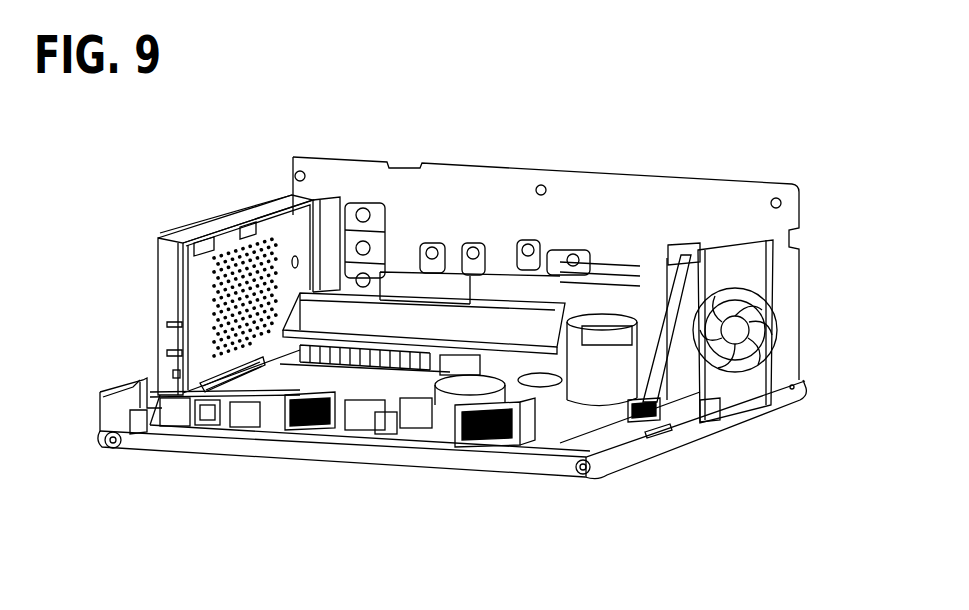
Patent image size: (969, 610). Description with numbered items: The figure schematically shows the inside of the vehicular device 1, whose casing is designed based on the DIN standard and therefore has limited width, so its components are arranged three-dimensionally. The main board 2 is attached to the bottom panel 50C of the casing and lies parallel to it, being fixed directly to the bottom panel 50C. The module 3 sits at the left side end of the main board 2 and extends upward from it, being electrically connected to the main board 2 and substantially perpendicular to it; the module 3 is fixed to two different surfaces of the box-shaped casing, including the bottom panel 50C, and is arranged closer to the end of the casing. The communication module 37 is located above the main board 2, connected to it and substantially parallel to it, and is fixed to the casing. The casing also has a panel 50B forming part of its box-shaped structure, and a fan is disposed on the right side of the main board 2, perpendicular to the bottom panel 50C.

The electronic apparatus 1 is at (619, 114).
The main board 2 is at (430, 422).
The module 3 is at (198, 220).
The communication module 37 is at (447, 348).
The rear wall 50B is at (707, 183).
The bottom panel 50C is at (517, 469).